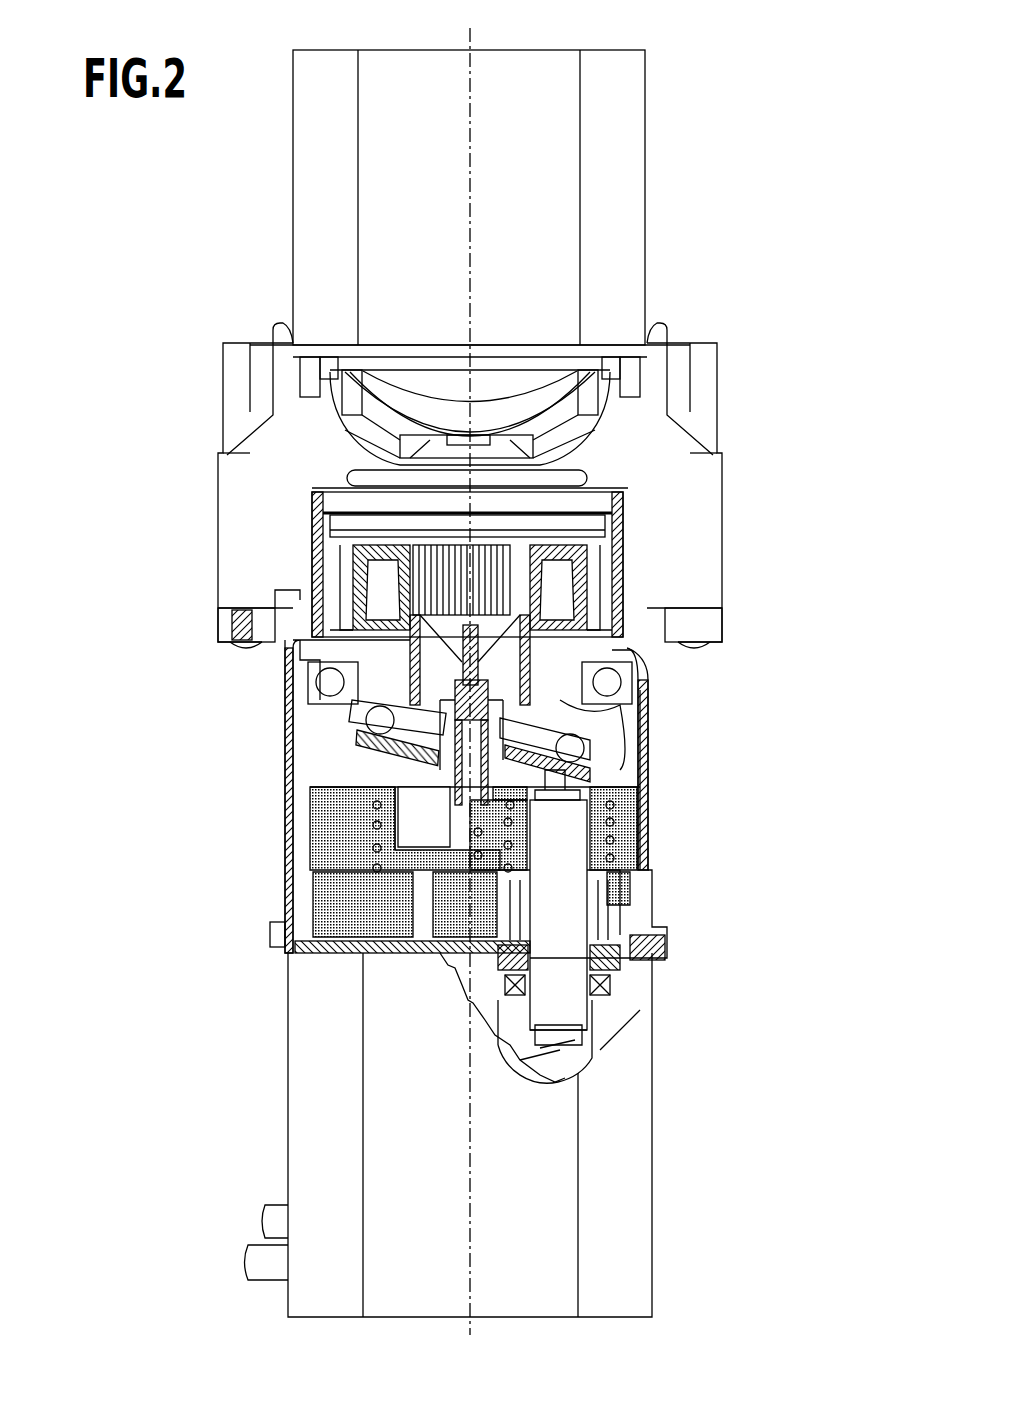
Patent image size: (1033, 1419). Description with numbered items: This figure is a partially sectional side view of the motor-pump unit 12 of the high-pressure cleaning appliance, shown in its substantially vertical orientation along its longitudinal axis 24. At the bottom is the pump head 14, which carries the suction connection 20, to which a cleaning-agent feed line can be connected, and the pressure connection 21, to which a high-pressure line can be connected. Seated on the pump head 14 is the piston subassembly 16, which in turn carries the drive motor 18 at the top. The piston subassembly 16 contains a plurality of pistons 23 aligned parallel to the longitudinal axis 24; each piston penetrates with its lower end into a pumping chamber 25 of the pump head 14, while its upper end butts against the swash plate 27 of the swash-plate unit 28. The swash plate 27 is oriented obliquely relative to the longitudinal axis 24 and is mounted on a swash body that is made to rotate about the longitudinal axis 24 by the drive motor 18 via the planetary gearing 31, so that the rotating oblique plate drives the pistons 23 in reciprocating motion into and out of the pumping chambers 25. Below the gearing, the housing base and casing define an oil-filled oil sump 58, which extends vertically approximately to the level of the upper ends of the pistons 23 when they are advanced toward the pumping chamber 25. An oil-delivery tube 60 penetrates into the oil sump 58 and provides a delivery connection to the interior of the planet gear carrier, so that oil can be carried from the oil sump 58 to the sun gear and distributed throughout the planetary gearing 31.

The motor-pump unit 12 is at (622, 42).
The pump head 14 is at (658, 1153).
The piston subassembly 16 is at (675, 692).
The drive motor 18 is at (655, 217).
The suction connection 20 is at (268, 1207).
The pressure connection 21 is at (252, 1260).
The pistons 23 is at (410, 828).
The longitudinal axis 24 is at (470, 168).
The pumping chamber 25 is at (600, 1045).
The swash plate 27 is at (587, 777).
The swash-plate unit 28 is at (353, 727).
The planetary gearing 31 is at (620, 538).
The oil sump 58 is at (327, 800).
The oil-delivery tube 60 is at (548, 782).